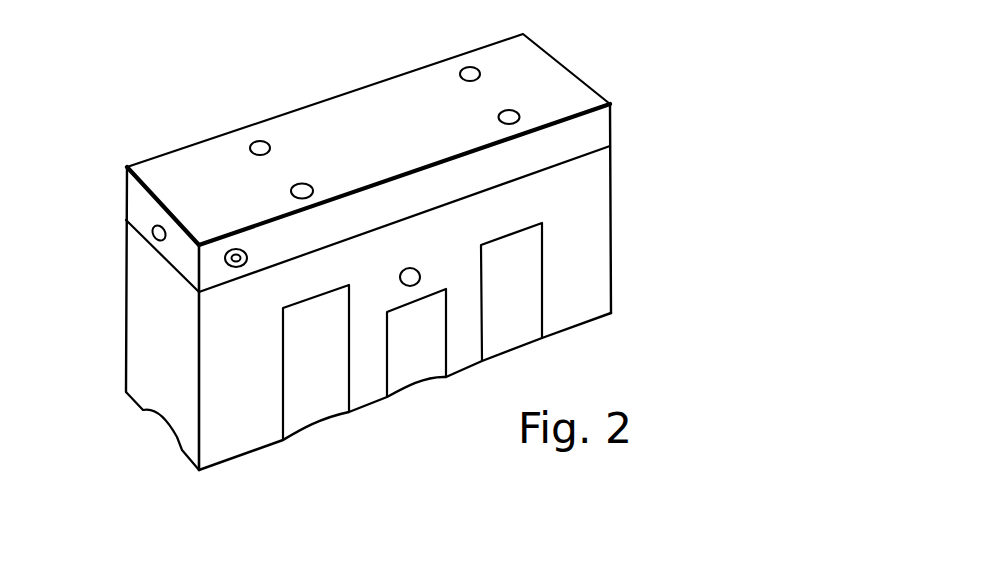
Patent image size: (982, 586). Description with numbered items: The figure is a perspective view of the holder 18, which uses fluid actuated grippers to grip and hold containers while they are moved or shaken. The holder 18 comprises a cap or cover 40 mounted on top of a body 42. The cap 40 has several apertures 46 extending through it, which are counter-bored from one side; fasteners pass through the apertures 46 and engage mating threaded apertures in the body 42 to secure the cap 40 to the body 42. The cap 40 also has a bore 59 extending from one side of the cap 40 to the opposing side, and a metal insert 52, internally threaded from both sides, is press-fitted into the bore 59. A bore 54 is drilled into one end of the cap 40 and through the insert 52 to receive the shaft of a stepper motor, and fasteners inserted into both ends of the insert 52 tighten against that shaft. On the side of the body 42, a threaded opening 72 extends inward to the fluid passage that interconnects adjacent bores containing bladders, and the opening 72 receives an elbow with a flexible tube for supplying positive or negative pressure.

The holder 18 is at (314, 74).
The cap 40 is at (573, 72).
The body 42 is at (612, 248).
The aperture 46 is at (455, 66).
The metal insert 52 is at (228, 266).
The bore 54 is at (152, 238).
The bore 59 is at (247, 252).
The opening 72 is at (418, 285).